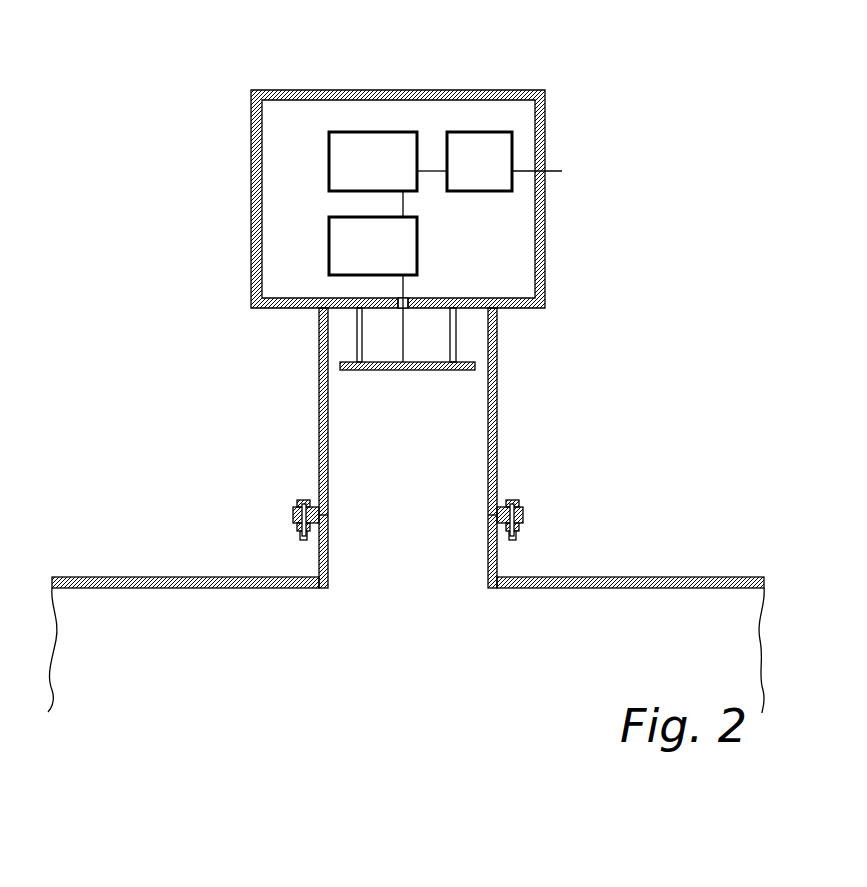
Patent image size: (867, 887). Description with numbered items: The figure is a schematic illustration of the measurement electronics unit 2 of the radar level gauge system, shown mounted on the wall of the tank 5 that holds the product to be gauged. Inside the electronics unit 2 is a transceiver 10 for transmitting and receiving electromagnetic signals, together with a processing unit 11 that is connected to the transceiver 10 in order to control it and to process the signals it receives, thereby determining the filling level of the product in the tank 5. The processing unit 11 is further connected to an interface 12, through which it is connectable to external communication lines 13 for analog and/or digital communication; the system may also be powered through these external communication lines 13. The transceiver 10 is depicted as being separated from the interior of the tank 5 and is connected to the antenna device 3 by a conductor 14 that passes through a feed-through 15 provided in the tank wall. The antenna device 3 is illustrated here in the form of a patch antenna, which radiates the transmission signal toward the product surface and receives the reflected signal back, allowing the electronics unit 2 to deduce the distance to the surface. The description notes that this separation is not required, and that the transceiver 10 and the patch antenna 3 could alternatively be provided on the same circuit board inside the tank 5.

The measurement electronics unit 2 is at (312, 90).
The antenna device 3 is at (340, 366).
The tank 5 is at (645, 577).
The transceiver 10 is at (417, 245).
The processing unit 11 is at (329, 163).
The interface 12 is at (482, 132).
The external communication lines 13 is at (554, 172).
The conductor 14 is at (403, 333).
The feed-through 15 is at (411, 296).